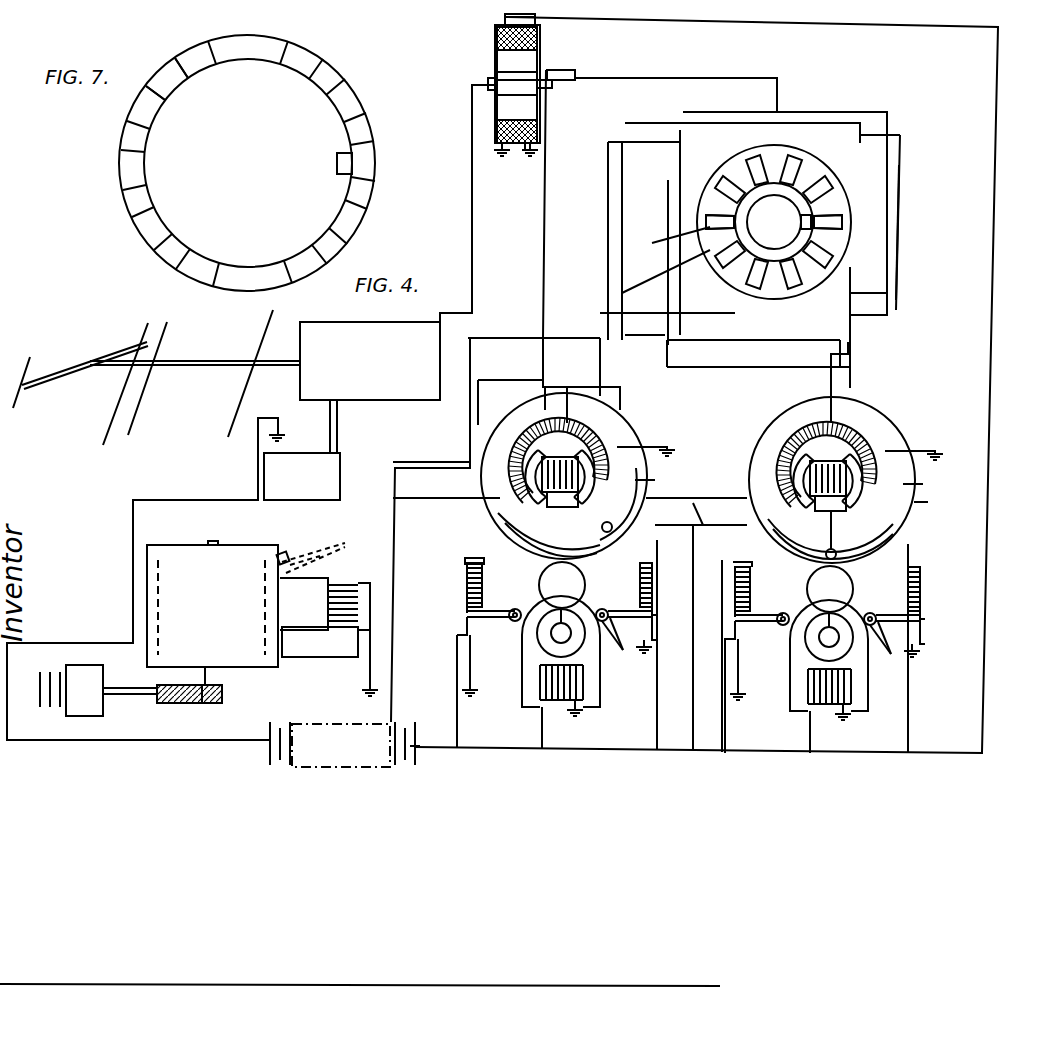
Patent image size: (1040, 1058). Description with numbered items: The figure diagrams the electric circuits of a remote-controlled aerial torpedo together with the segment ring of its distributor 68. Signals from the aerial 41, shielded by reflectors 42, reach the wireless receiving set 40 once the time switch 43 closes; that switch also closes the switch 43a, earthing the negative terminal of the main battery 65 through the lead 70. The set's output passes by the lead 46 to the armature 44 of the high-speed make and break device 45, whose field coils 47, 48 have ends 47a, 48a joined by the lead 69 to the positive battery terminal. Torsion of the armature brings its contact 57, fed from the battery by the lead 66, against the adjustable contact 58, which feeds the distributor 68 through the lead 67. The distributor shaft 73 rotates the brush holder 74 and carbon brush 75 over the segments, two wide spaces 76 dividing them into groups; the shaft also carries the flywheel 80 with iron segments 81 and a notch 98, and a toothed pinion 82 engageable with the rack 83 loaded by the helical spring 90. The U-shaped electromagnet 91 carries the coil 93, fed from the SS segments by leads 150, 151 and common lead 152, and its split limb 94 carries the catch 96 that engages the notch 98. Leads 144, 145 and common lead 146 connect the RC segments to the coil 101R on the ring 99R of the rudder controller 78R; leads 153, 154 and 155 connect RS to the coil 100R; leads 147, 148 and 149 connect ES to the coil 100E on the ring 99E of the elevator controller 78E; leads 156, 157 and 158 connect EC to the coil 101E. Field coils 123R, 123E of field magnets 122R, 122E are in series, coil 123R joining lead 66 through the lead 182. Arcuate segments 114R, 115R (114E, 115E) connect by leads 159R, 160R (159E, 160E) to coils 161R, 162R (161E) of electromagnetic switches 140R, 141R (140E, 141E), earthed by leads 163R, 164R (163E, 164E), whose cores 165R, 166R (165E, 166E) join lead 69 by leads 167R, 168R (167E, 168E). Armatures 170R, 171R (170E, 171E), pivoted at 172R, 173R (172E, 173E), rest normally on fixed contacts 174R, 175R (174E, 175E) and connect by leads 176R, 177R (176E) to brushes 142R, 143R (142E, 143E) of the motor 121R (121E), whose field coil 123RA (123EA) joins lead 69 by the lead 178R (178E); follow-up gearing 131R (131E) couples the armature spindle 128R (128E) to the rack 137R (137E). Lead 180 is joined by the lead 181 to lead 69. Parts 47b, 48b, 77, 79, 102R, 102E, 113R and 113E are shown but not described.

In FIG. 4, the short-wave wireless receiving set 40 is at (370, 361).
In FIG. 4, the aerial 41 is at (68, 362).
In FIG. 4, the reflectors 42 is at (240, 400).
In FIG. 4, the time switch 43 is at (302, 450).
In FIG. 4, the switch 43a is at (258, 473).
In FIG. 4, the armature 44 is at (497, 97).
In FIG. 4, the high speed make and break device 45 is at (500, 84).
In FIG. 4, the lead 46 is at (488, 86).
In FIG. 4, the field coil 47 is at (540, 44).
In FIG. 4, the end of coil 47 47a is at (530, 155).
In FIG. 4, the contact 47b is at (535, 21).
In FIG. 4, the field coil 48 is at (497, 36).
In FIG. 4, the end of coil 48 48a is at (497, 142).
In FIG. 4, the lead 48b is at (505, 17).
In FIG. 4, the contact 57 is at (550, 86).
In FIG. 4, the adjustable contact 58 is at (580, 80).
In FIG. 4, the main battery 65 is at (345, 744).
In FIG. 4, the lead 66 is at (545, 221).
In FIG. 4, the lead 67 is at (700, 78).
In FIG. 4, the distributor 68 is at (775, 298).
In FIG. 4, the lead 69 is at (715, 20).
In FIG. 4, the lead 70 is at (93, 740).
In FIG. 4, the shaft 73 is at (215, 675).
In FIG. 4, the brush holder 74 is at (748, 219).
In FIG. 7, the carbon brush 75 is at (337, 164).
In FIG. 4, the carbon brush 75 is at (779, 222).
In FIG. 7, the spaces 76 is at (247, 163).
In FIG. 7, the segment 77 is at (167, 79).
In FIG. 4, the rudder controller 78R is at (600, 396).
In FIG. 4, the elevator controller 78E is at (870, 399).
In FIG. 4, the lug 79 is at (210, 545).
In FIG. 4, the flywheel 80 is at (212, 606).
In FIG. 4, the iron segments 81 is at (150, 585).
In FIG. 4, the toothed pinion 82 is at (210, 703).
In FIG. 4, the rack 83 is at (175, 703).
In FIG. 4, the helical spring 90 is at (47, 672).
In FIG. 4, the U-shaped electromagnet 91 is at (320, 642).
In FIG. 4, the coil 93 is at (360, 603).
In FIG. 4, the limb 94 is at (322, 554).
In FIG. 4, the catch 96 is at (310, 548).
In FIG. 4, the notch 98 is at (211, 607).
In FIG. 4, the ring 99R is at (600, 437).
In FIG. 4, the ring 99E is at (857, 460).
In FIG. 4, the coil 100R is at (590, 410).
In FIG. 4, the coil 100E is at (840, 477).
In FIG. 4, the coil 101R is at (520, 447).
In FIG. 4, the coil 101E is at (781, 443).
In FIG. 4, the lead 102R is at (648, 498).
In FIG. 4, the lead 102E is at (938, 499).
In FIG. 4, the pivot 113R is at (612, 532).
In FIG. 4, the pivot 113E is at (812, 559).
In FIG. 4, the arcuate contact segment 114R is at (617, 447).
In FIG. 4, the arcuate contact segment 114E is at (916, 445).
In FIG. 4, the arcuate contact segment 115R is at (550, 540).
In FIG. 4, the arcuate contact segment 115E is at (800, 535).
In FIG. 4, the motor 121R is at (537, 683).
In FIG. 4, the motor 121E is at (802, 723).
In FIG. 4, the field magnet 122R is at (515, 453).
In FIG. 4, the field magnet 122E is at (878, 479).
In FIG. 4, the field coil 123R is at (553, 420).
In FIG. 4, the field coil 123E is at (783, 389).
In FIG. 4, the field coil of motor 123RA is at (561, 673).
In FIG. 4, the field coil of motor 123EA is at (829, 676).
In FIG. 4, the armature spindle 128R is at (547, 647).
In FIG. 4, the armature spindle 128E is at (794, 683).
In FIG. 4, the follow-up gearing 131R is at (562, 585).
In FIG. 4, the follow-up gearing 131E is at (830, 589).
In FIG. 4, the rack 137R is at (597, 555).
In FIG. 4, the rack 137E is at (891, 504).
In FIG. 4, the electromagnetic switch 140R is at (617, 607).
In FIG. 4, the electromagnetic switch 140E is at (890, 608).
In FIG. 4, the electromagnetic switch 141R is at (466, 580).
In FIG. 4, the electromagnetic switch 141E is at (778, 595).
In FIG. 4, the brush 142R is at (557, 623).
In FIG. 4, the brush 142E is at (803, 654).
In FIG. 4, the brush 143R is at (578, 638).
In FIG. 4, the brush 143E is at (871, 651).
In FIG. 4, the lead 144 is at (620, 182).
In FIG. 4, the lead 145 is at (732, 313).
In FIG. 4, the common lead 146 is at (608, 324).
In FIG. 4, the lead 147 is at (680, 180).
In FIG. 4, the lead 148 is at (880, 303).
In FIG. 4, the common lead 149 is at (853, 380).
In FIG. 4, the lead 150 is at (898, 190).
In FIG. 4, the lead 151 is at (697, 223).
In FIG. 4, the common lead 152 is at (672, 341).
In FIG. 4, the lead 153 is at (622, 292).
In FIG. 4, the lead 154 is at (900, 148).
In FIG. 4, the common lead 155 is at (645, 328).
In FIG. 4, the lead 156 is at (822, 140).
In FIG. 4, the lead 157 is at (668, 343).
In FIG. 4, the common lead 158 is at (850, 355).
In FIG. 4, the lead 159R is at (635, 480).
In FIG. 4, the lead 159E is at (930, 484).
In FIG. 4, the lead 160R is at (482, 568).
In FIG. 4, the lead 160E is at (737, 586).
In FIG. 4, the coil 161R is at (640, 577).
In FIG. 4, the coil 161E is at (932, 603).
In FIG. 4, the coil 162R is at (462, 562).
In FIG. 4, the earthed lead 163R is at (644, 650).
In FIG. 4, the earthed lead 163E is at (934, 654).
In FIG. 4, the earthed lead 164R is at (470, 668).
In FIG. 4, the earthed lead 164E is at (751, 669).
In FIG. 4, the core 165R is at (653, 577).
In FIG. 4, the core 165E is at (932, 589).
In FIG. 4, the core 166R is at (468, 590).
In FIG. 4, the core 166E is at (709, 599).
In FIG. 4, the lead 167R is at (657, 720).
In FIG. 4, the lead 167E is at (936, 648).
In FIG. 4, the lead 168R is at (457, 652).
In FIG. 4, the lead 168E is at (740, 760).
In FIG. 4, the armature 170R is at (657, 617).
In FIG. 4, the armature 170E is at (942, 609).
In FIG. 4, the armature 171R is at (468, 613).
In FIG. 4, the armature 171E is at (733, 611).
In FIG. 4, the pivot 172R is at (638, 650).
In FIG. 4, the pivot 172E is at (877, 631).
In FIG. 4, the pivot 173R is at (513, 610).
In FIG. 4, the pivot 173E is at (761, 634).
In FIG. 4, the fixed contact 174R is at (652, 630).
In FIG. 4, the fixed contact 174E is at (942, 627).
In FIG. 4, the fixed contact 175R is at (468, 622).
In FIG. 4, the fixed contact 175E is at (709, 687).
In FIG. 4, the lead 176R is at (620, 651).
In FIG. 4, the lead 176E is at (891, 648).
In FIG. 4, the lead 177R is at (537, 633).
In FIG. 4, the lead 178R is at (542, 723).
In FIG. 4, the lead 178E is at (835, 744).
In FIG. 4, the lead 180 is at (660, 498).
In FIG. 4, the lead 181 is at (693, 748).
In FIG. 4, the lead 182 is at (446, 492).